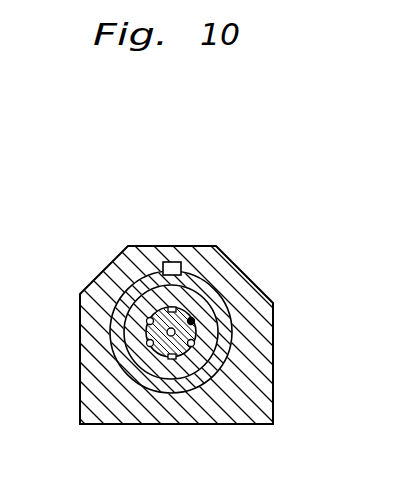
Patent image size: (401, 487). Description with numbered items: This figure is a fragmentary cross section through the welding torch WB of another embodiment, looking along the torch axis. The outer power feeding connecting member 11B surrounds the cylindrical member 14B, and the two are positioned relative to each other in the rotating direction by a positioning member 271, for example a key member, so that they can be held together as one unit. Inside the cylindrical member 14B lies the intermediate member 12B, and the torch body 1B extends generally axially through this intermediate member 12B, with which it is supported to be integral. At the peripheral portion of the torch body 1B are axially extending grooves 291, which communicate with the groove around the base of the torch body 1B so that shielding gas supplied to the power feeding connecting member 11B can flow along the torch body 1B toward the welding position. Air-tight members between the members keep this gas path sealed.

The welding torch WB is at (263, 178).
The power feeding connecting member 11B is at (98, 387).
The intermediate member 12B is at (110, 293).
The cylindrical member 14B is at (152, 283).
The torch body 1B is at (183, 331).
The grooves 291 is at (193, 320).
The positioning member 271 is at (173, 263).